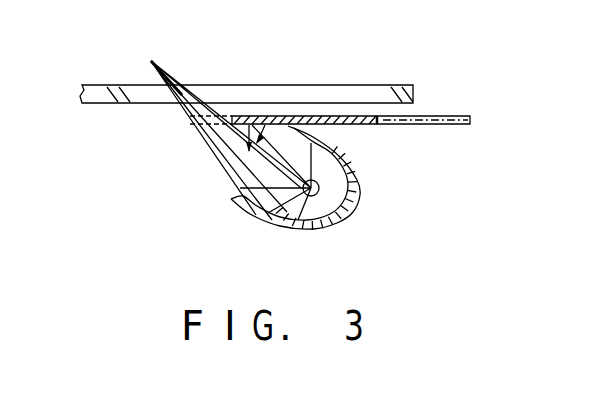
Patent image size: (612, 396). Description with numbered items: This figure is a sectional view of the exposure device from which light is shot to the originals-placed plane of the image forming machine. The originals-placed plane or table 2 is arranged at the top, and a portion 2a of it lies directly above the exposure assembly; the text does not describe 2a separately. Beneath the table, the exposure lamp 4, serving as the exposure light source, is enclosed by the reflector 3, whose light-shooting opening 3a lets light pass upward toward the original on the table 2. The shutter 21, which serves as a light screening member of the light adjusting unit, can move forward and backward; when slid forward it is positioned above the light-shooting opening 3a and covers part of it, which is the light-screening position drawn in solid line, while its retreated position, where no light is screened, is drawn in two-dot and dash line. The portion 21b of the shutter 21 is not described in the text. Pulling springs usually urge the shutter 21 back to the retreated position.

The originals-placed table 2 is at (373, 98).
The edge portion of plate 2a is at (104, 84).
The shutter 21 is at (368, 127).
The engaging portion of slide member 21b is at (226, 116).
The reflector 3 is at (361, 190).
The light-shooting opening 3a is at (250, 177).
The exposure lamp 4 is at (311, 188).